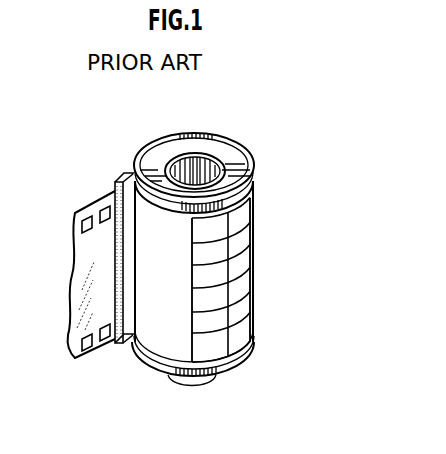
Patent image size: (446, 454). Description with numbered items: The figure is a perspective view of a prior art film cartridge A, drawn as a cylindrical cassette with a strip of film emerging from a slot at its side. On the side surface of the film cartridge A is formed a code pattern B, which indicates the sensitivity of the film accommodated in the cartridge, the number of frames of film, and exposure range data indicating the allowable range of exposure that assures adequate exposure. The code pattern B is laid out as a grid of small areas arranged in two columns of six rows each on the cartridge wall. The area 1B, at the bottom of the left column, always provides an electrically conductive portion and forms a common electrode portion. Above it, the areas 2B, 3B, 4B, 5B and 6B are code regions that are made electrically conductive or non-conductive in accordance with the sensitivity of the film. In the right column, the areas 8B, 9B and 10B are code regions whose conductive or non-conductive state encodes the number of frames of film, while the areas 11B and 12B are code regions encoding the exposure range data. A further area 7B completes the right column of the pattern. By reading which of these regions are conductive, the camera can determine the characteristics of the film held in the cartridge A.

The film cartridge A is at (201, 133).
The code pattern B is at (240, 265).
The common electrode area 1B is at (197, 353).
The code region 2B is at (197, 331).
The code region 3B is at (197, 306).
The code region 4B is at (196, 279).
The code region 5B is at (196, 254).
The code region 6B is at (195, 228).
The bar code segment 7B is at (248, 332).
The code region 8B is at (248, 308).
The code region 9B is at (244, 287).
The code region 10B is at (246, 255).
The code region 11B is at (247, 235).
The code region 12B is at (246, 210).